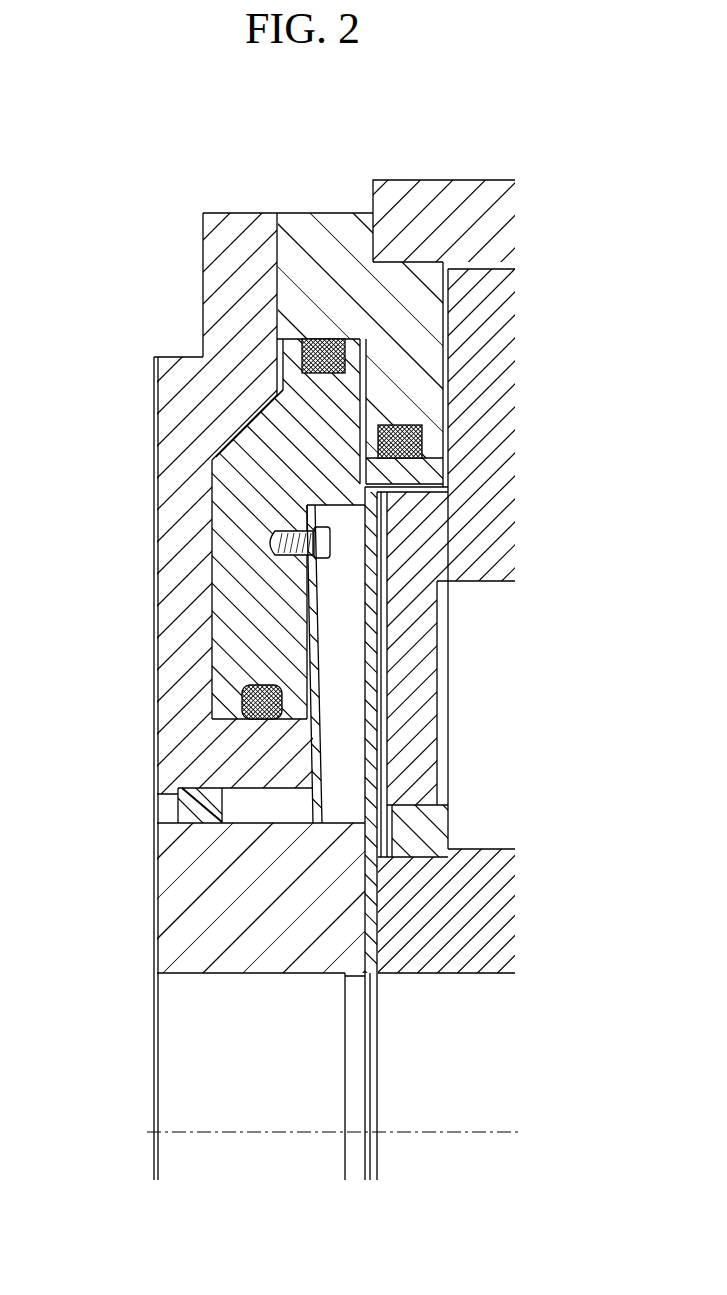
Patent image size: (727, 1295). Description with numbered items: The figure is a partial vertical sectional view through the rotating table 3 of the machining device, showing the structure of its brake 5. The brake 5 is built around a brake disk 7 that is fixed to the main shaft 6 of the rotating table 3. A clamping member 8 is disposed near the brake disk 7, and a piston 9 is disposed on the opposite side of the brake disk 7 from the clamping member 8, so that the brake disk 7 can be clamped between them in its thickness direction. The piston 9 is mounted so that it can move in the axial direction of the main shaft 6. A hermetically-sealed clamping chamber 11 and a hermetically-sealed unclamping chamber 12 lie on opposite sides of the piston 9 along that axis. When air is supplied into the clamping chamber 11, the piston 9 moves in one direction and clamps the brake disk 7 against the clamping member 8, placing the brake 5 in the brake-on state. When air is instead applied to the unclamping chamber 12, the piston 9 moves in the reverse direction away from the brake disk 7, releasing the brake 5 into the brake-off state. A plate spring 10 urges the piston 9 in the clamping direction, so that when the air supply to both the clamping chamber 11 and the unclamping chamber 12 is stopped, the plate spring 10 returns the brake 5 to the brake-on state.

The rotating table 3 is at (91, 164).
The brake 5 is at (335, 795).
The main shaft 6 is at (155, 877).
The brake disk 7 is at (380, 758).
The clamping member 8 is at (438, 703).
The piston 9 is at (212, 540).
The plate spring 10 is at (318, 628).
The clamping chamber 11 is at (264, 350).
The unclamping chamber 12 is at (386, 362).